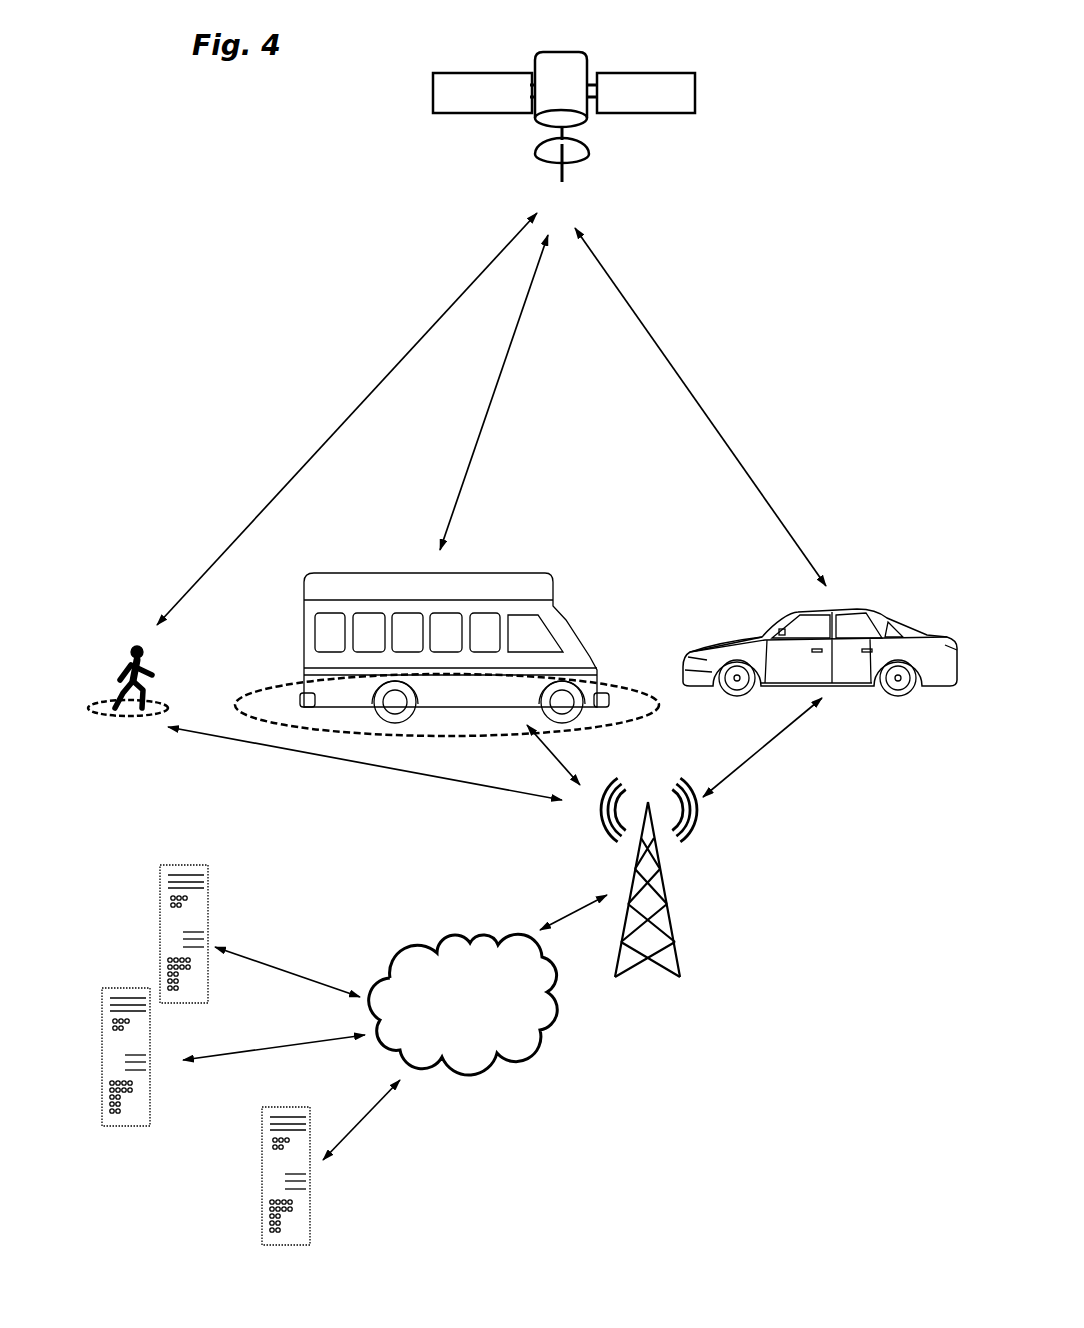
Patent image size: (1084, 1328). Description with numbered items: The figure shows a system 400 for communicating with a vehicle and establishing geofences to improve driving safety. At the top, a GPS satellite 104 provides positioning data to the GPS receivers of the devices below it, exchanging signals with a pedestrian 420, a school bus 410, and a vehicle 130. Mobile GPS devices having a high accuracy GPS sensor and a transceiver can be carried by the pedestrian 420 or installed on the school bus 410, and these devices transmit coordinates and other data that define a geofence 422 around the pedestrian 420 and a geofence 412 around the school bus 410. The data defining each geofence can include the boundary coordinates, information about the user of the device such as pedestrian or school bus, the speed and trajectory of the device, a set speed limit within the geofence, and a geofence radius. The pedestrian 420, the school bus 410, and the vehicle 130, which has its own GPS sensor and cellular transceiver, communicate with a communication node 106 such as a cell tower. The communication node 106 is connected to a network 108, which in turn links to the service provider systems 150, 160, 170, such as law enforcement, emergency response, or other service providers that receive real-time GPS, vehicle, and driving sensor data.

The system 400 is at (493, 45).
The GPS satellite 104 is at (584, 140).
The school bus 410 is at (545, 574).
The geofence 412 is at (617, 727).
The pedestrian 420 is at (147, 670).
The geofence 422 is at (168, 702).
The vehicle 130 is at (887, 613).
The communication node 106 is at (667, 898).
The network 108 is at (463, 1004).
The service provider system 150 is at (210, 900).
The service provider system 160 is at (102, 1037).
The service provider system 170 is at (262, 1165).